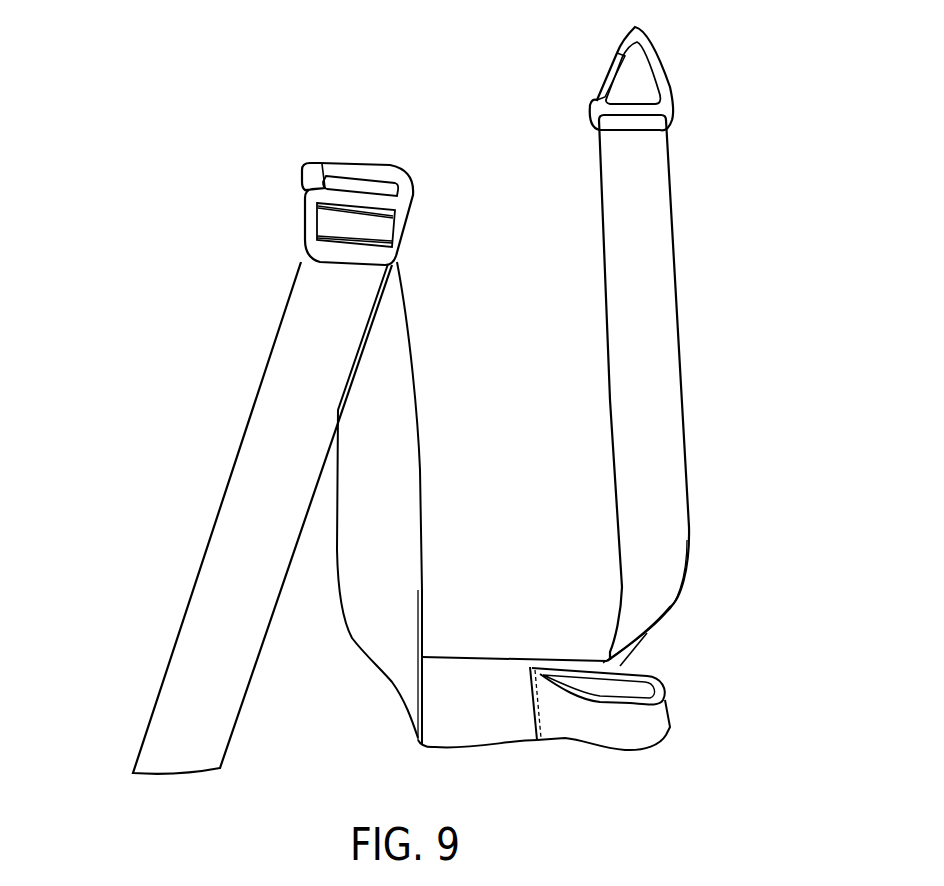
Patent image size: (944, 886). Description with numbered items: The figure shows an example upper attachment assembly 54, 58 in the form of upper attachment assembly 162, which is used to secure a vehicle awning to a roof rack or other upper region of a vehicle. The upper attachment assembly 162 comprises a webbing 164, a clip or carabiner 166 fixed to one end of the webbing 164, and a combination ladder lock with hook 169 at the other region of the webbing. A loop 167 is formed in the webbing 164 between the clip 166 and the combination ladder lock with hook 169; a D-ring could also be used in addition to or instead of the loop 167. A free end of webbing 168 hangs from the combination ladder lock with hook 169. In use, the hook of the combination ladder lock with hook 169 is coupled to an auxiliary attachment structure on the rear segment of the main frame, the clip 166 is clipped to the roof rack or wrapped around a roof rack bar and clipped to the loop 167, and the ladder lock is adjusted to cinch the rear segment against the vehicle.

The upper attachment assembly 54 is at (462, 387).
The upper attachment assembly 58 is at (462, 387).
The upper attachment assembly 162 is at (442, 387).
The webbing 164 is at (680, 333).
The clip or carabiner 166 is at (665, 65).
The loop 167 is at (667, 703).
The free end strap 168 is at (143, 742).
The combination ladder lock with hook 169 is at (413, 222).